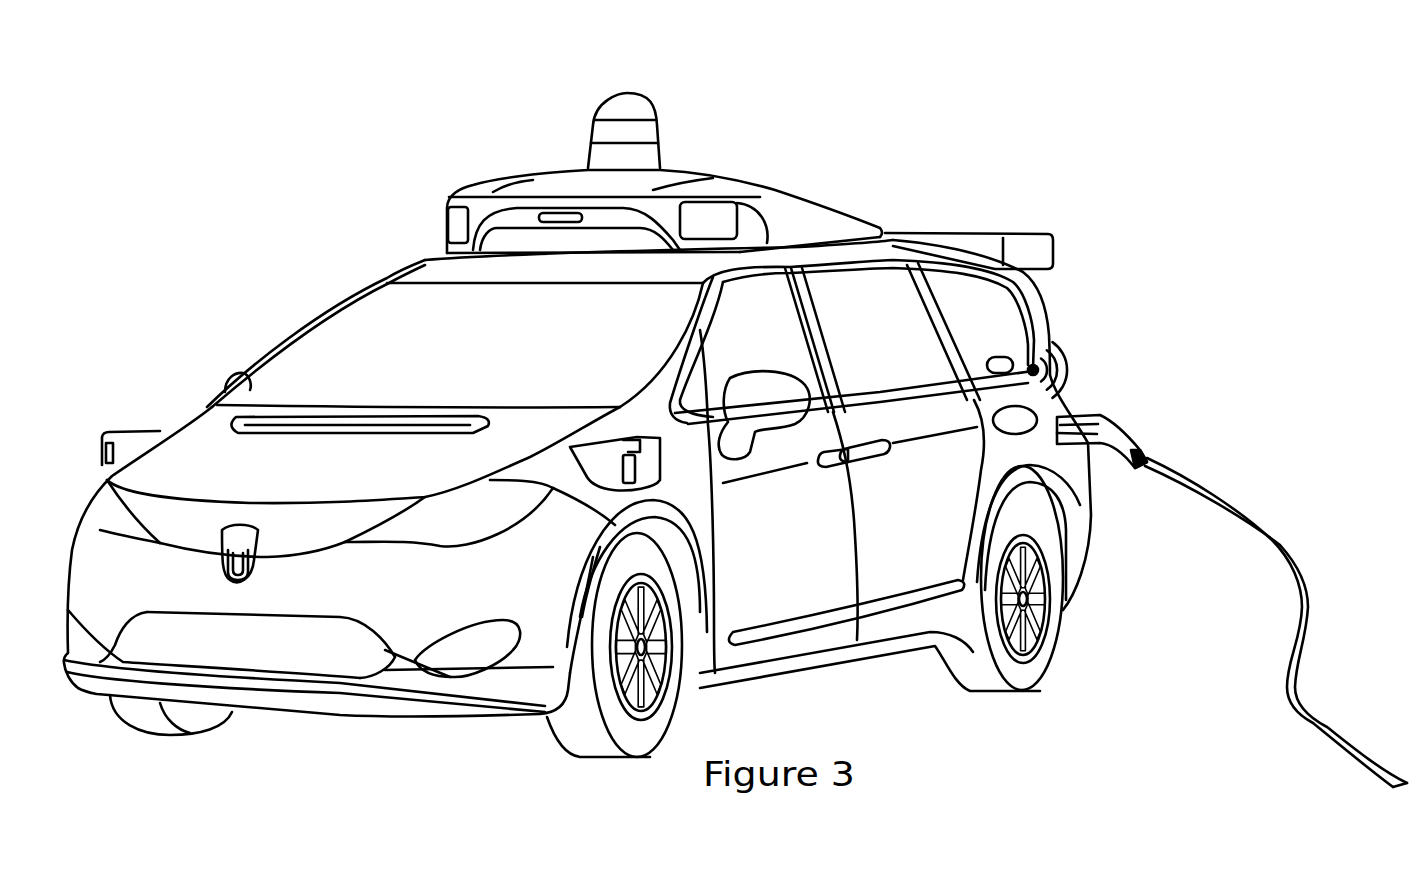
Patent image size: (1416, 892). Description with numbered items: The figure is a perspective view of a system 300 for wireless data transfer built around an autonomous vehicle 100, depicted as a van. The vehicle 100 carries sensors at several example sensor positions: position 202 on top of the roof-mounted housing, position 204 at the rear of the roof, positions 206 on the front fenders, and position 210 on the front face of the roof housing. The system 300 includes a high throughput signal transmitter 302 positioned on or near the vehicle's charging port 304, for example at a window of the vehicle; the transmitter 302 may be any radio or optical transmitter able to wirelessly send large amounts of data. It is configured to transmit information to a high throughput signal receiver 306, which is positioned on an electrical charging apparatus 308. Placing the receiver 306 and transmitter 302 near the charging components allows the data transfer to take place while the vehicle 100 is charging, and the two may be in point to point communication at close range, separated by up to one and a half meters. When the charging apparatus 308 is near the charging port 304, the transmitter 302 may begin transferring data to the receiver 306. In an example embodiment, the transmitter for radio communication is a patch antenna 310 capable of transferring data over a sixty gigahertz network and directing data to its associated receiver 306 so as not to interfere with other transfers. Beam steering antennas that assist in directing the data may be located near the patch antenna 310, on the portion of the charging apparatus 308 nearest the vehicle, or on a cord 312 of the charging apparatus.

The vehicle 100 is at (896, 188).
The sensor position 202 is at (648, 103).
The sensor position 204 is at (1048, 230).
The sensor position 206 is at (147, 432).
The sensor position 210 is at (543, 214).
The system for wireless data transfer 300 is at (1171, 292).
The high throughput signal transmitter 302 is at (1009, 352).
The charging port 304 is at (993, 432).
The high throughput signal receiver 306 is at (1093, 412).
The electrical charging apparatus 308 is at (1137, 470).
The patch antenna 310 is at (987, 364).
The cord 312 is at (1283, 540).